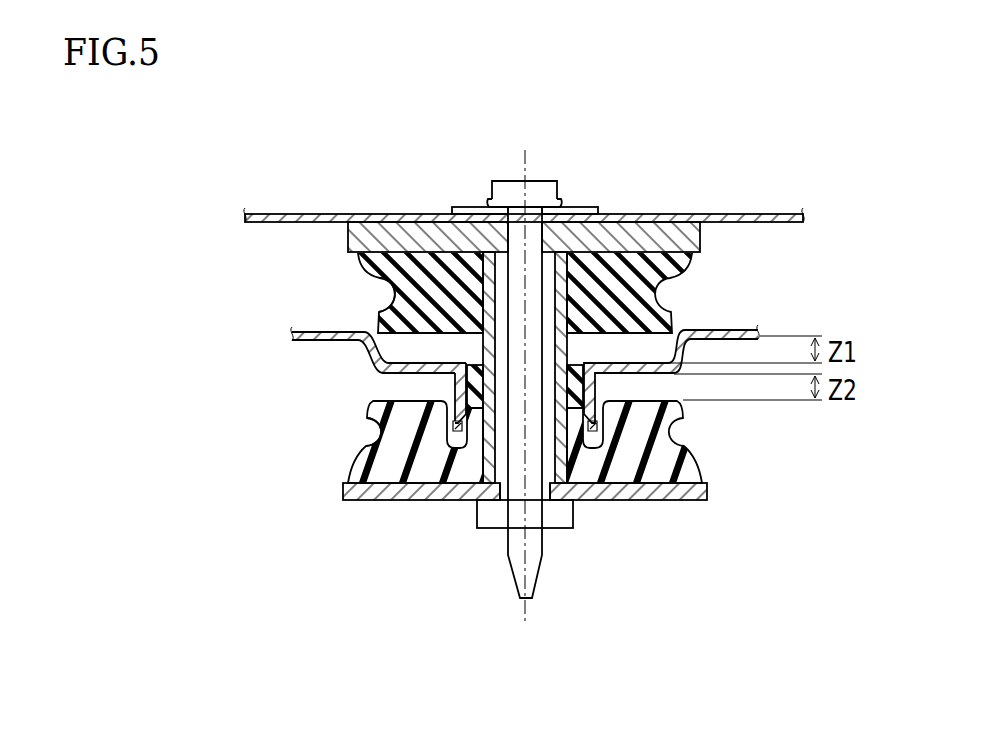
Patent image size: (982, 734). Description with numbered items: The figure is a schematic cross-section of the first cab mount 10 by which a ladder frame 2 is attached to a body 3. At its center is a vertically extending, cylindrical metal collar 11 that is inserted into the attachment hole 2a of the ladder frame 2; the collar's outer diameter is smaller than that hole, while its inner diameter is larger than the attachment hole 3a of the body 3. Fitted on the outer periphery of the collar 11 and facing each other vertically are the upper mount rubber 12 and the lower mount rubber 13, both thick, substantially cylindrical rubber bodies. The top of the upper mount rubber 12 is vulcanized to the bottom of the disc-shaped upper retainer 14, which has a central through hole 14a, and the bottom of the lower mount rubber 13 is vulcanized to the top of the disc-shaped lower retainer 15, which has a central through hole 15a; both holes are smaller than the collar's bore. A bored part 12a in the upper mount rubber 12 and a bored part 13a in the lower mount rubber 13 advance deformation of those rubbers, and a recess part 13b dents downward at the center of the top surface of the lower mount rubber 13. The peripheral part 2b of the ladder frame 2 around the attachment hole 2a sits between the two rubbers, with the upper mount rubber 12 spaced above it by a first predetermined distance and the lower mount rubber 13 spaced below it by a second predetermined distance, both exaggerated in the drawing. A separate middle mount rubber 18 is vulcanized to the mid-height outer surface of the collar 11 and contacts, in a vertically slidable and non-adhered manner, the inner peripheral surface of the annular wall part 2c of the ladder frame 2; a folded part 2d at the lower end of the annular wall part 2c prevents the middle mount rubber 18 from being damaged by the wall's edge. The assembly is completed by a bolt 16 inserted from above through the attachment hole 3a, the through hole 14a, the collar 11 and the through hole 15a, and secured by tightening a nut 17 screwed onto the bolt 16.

The ladder frame 2 is at (318, 330).
The attachment hole 2a is at (580, 358).
The peripheral part 2b is at (432, 362).
The annular wall part 2c is at (455, 388).
The folded part 2d is at (458, 433).
The body 3 is at (758, 214).
The attachment hole 3a is at (535, 206).
The first cab mount 10 is at (706, 449).
The collar 11 is at (568, 300).
The upper mount rubber 12 is at (428, 262).
The bored part 12a is at (397, 288).
The lower mount rubber 13 is at (388, 468).
The bored part 13a is at (375, 430).
The recess part 13b is at (585, 440).
The upper retainer 14 is at (377, 238).
The through hole 14a is at (556, 238).
The lower retainer 15 is at (648, 493).
The through hole 15a is at (550, 492).
The bolt 16 is at (513, 192).
The nut 17 is at (490, 522).
The middle mount rubber 18 is at (474, 412).